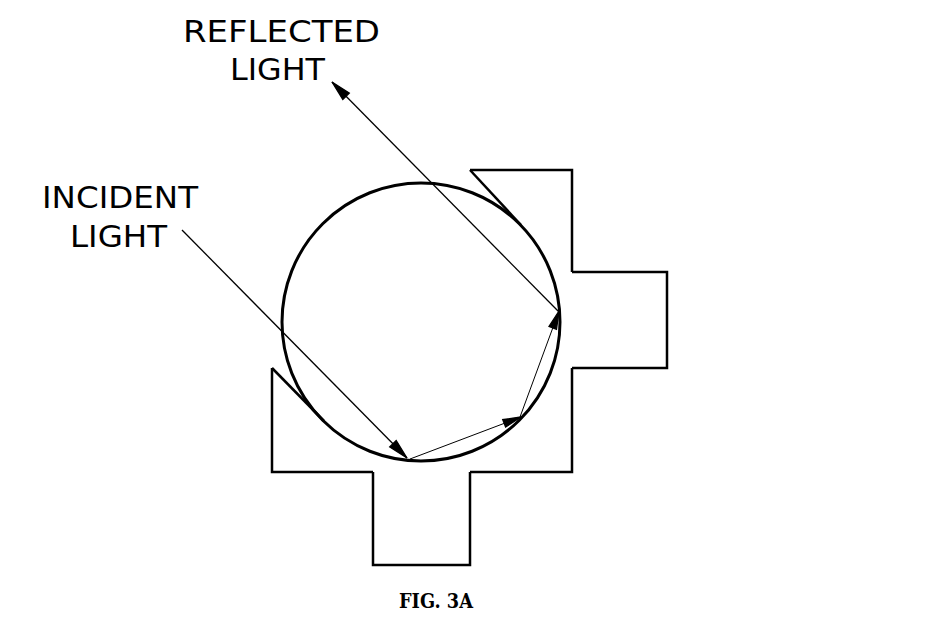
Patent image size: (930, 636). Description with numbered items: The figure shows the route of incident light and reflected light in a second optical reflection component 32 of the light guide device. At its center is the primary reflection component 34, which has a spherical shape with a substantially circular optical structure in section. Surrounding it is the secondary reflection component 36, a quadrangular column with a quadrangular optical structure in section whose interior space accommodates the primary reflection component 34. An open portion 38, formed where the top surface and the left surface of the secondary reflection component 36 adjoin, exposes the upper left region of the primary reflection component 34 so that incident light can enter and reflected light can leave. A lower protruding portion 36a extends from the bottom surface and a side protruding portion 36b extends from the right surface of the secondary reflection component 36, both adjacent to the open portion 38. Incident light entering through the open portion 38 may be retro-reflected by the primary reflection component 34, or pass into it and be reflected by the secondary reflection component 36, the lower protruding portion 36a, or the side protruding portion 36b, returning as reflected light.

The second optical reflection component 32 is at (247, 410).
The primary reflection component 34 is at (341, 238).
The secondary reflection component 36 is at (580, 152).
The lower protruding portion 36a is at (470, 522).
The side protruding portion 36b is at (667, 320).
The open portion 38 is at (470, 170).